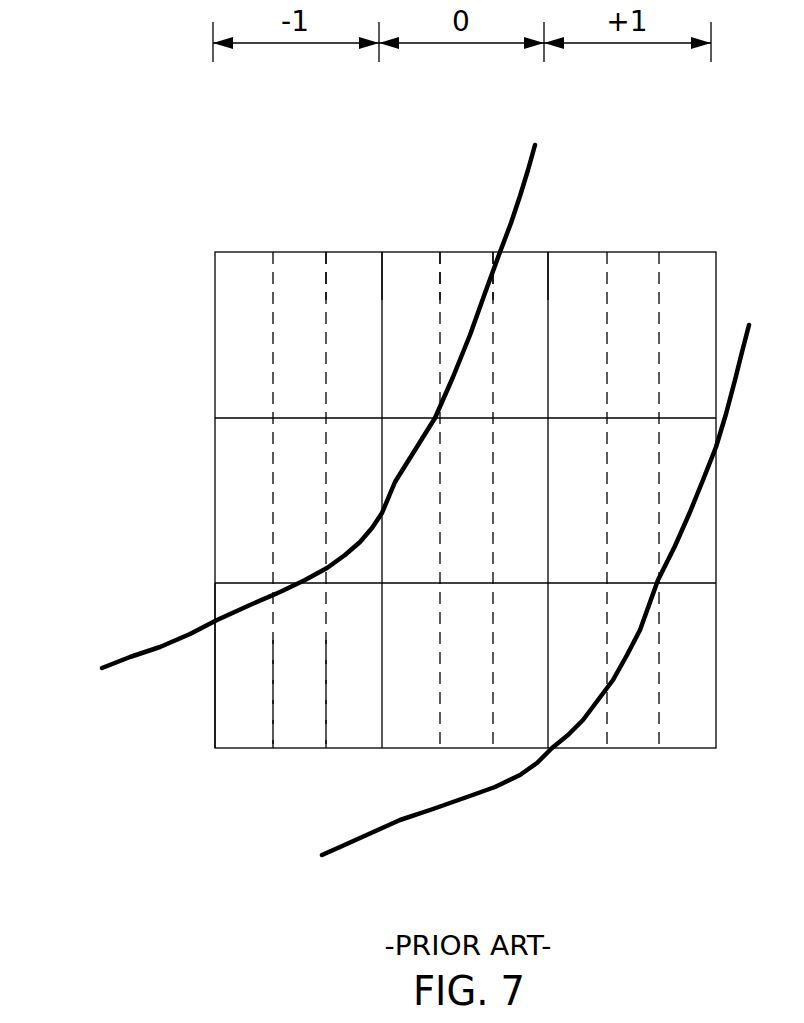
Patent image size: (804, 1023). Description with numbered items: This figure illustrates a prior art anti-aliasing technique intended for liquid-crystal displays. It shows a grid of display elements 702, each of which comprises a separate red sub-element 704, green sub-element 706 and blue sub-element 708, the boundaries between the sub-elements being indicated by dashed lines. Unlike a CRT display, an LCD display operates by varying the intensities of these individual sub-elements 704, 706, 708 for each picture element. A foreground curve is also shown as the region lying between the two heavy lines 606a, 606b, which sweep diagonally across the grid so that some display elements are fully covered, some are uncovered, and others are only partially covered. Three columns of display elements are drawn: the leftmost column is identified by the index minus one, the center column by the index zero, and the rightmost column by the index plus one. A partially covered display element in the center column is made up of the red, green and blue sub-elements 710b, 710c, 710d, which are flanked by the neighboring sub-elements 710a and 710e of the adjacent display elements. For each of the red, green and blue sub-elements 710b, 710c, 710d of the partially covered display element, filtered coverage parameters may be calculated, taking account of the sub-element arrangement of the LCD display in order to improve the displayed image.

The display elements 702 is at (215, 399).
The red sub-element 704 is at (239, 741).
The green sub-element 706 is at (281, 741).
The blue sub-element 708 is at (333, 741).
The sub-element 710a is at (349, 262).
The red sub-element of partially covered display element 710b is at (412, 262).
The green sub-element of partially covered display element 710c is at (462, 262).
The blue sub-element of partially covered display element 710d is at (515, 262).
The sub-element 710e is at (577, 258).
The heavy line 606a is at (143, 645).
The heavy line 606b is at (385, 828).